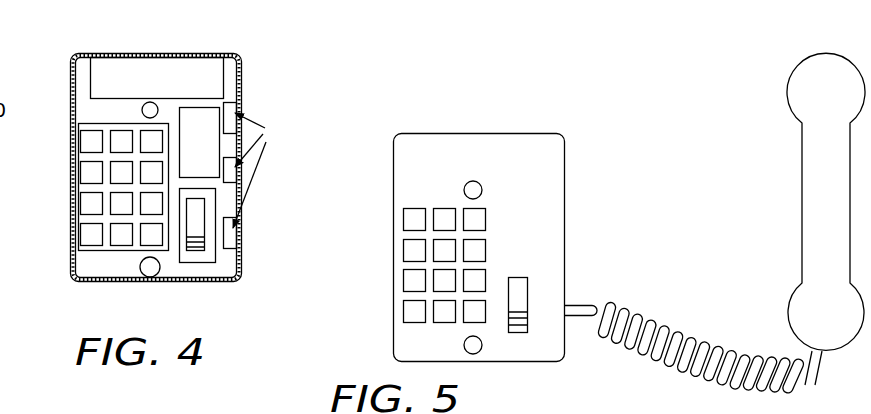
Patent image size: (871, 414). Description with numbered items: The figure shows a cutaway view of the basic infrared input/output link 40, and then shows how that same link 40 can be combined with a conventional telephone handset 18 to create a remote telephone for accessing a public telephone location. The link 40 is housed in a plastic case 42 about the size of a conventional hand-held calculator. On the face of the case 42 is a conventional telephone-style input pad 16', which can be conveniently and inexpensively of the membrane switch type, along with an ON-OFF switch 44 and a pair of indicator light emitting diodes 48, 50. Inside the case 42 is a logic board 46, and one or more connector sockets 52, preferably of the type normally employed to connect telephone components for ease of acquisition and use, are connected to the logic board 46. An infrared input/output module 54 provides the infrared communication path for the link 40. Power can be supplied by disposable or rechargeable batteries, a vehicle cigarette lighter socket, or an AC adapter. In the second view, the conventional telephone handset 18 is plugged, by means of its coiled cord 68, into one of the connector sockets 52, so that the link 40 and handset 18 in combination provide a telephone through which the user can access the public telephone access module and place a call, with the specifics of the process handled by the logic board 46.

In FIG. 4, the IR input/output link 40 is at (202, 192).
In FIG. 5, the IR input/output link 40 is at (532, 266).
In FIG. 4, the plastic case 42 is at (243, 82).
In FIG. 5, the plastic case 42 is at (566, 148).
In FIG. 4, the IR input/output module 54 is at (97, 88).
In FIG. 4, the indicator light emitting diode 48 is at (142, 110).
In FIG. 5, the indicator light emitting diode 48 is at (481, 183).
In FIG. 4, the logic board 46 is at (213, 172).
In FIG. 5, the logic board 46 is at (821, 382).
In FIG. 4, the telephone input pad 16' is at (94, 187).
In FIG. 5, the telephone input pad 16' is at (478, 261).
In FIG. 4, the ON-OFF switch 44 is at (205, 247).
In FIG. 5, the ON-OFF switch 44 is at (522, 321).
In FIG. 4, the indicator light emitting diode 50 is at (154, 277).
In FIG. 5, the indicator light emitting diode 50 is at (478, 353).
In FIG. 4, the connector socket 52 is at (243, 243).
In FIG. 5, the coiled cord 68 is at (685, 357).
In FIG. 5, the telephone handset 18 is at (818, 190).